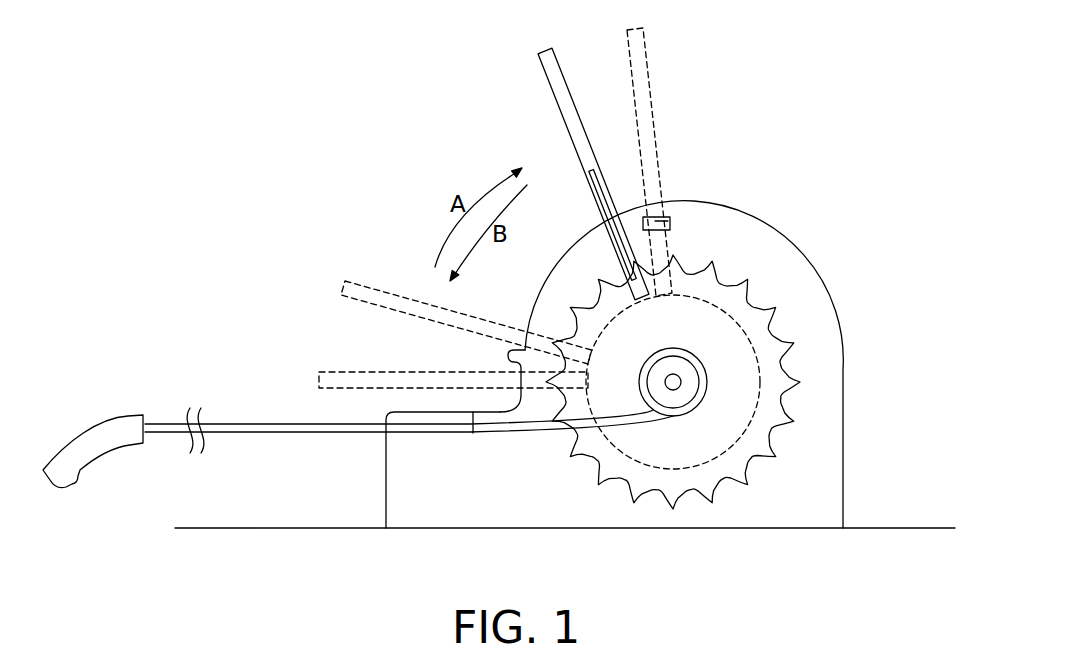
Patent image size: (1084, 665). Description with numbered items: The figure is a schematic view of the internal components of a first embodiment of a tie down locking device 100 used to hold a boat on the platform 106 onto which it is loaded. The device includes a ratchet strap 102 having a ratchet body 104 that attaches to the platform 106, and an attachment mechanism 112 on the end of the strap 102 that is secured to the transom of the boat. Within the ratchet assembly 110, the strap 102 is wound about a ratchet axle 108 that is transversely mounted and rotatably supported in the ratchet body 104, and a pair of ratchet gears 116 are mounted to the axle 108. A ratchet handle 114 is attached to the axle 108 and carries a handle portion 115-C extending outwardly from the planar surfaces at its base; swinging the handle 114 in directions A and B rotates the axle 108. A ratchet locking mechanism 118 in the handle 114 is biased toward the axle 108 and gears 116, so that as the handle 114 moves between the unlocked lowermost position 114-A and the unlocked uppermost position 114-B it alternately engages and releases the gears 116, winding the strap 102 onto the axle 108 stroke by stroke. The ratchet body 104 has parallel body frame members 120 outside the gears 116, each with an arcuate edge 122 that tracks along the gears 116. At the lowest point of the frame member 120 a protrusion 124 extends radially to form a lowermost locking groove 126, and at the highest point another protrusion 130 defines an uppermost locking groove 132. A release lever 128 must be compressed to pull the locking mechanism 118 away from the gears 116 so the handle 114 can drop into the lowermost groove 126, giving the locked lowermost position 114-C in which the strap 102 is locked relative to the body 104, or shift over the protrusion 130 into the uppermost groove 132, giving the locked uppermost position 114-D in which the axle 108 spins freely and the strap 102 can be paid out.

The tie down locking device 100 is at (286, 142).
The ratchet strap 102 is at (252, 424).
The ratchet body 104 is at (684, 345).
The platform 106 is at (918, 528).
The ratchet axle 108 is at (707, 382).
The ratchet assembly 110 is at (817, 140).
The attachment mechanism 112 is at (115, 415).
The ratchet handle 114 is at (543, 150).
The unlocked lowermost position 114-A is at (343, 283).
The unlocked uppermost position 114-B is at (562, 150).
The locked lowermost position 114-C is at (348, 378).
The locked uppermost position 114-D is at (645, 53).
The handle portion 115-C is at (593, 162).
The ratchet gears 116 is at (763, 320).
The ratchet locking mechanism 118 is at (624, 230).
The body frame members 120 is at (820, 493).
The edge 122 is at (538, 310).
The protrusion 124 is at (525, 350).
The lowermost locking groove 126 is at (473, 433).
The release lever 128 is at (595, 185).
The protrusion 130 is at (632, 222).
The uppermost locking groove 132 is at (670, 218).